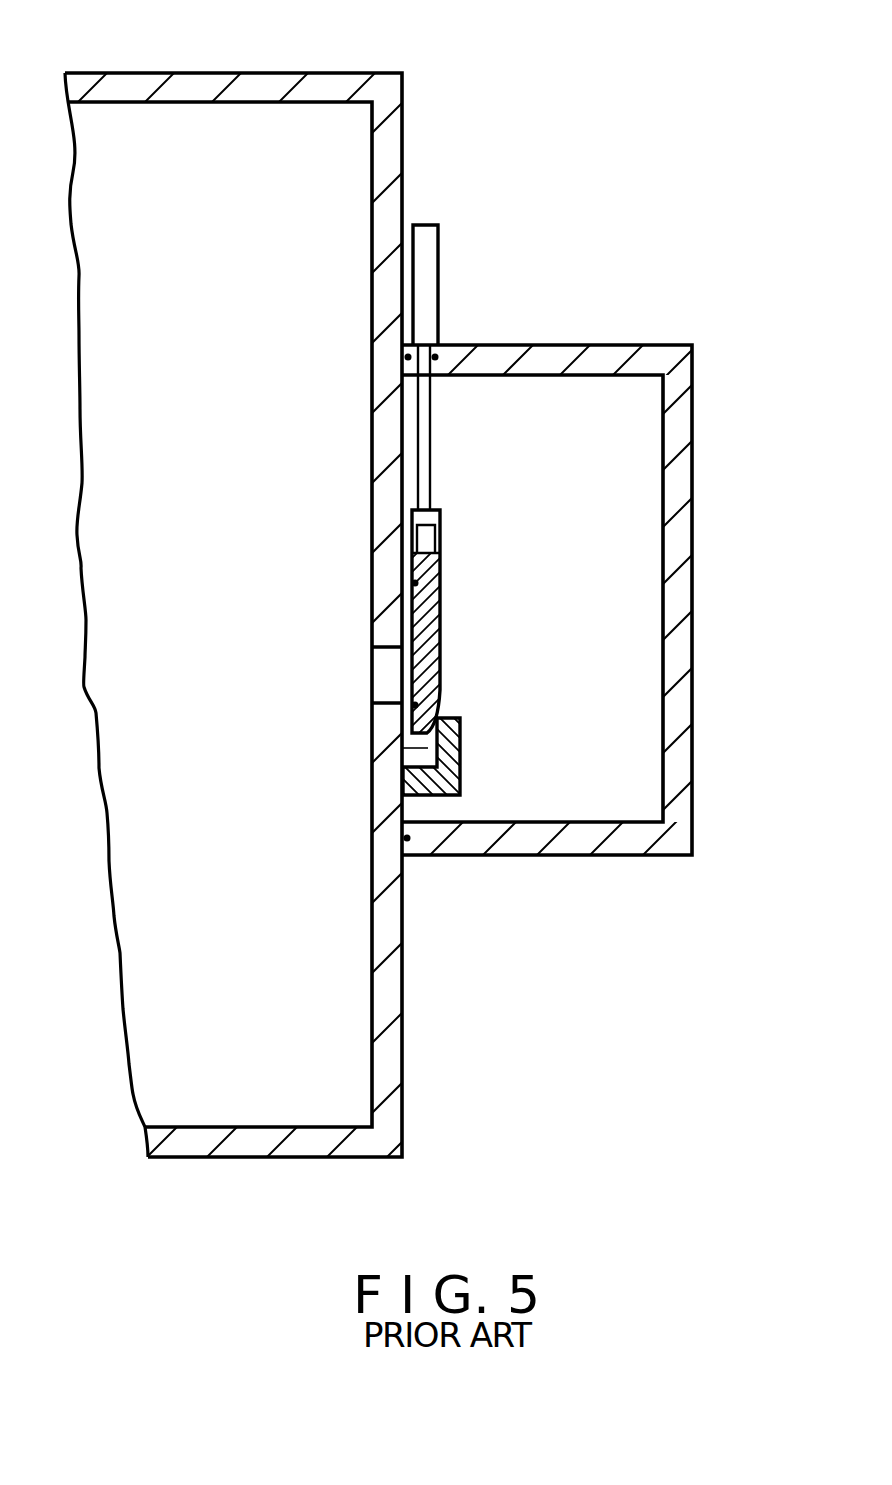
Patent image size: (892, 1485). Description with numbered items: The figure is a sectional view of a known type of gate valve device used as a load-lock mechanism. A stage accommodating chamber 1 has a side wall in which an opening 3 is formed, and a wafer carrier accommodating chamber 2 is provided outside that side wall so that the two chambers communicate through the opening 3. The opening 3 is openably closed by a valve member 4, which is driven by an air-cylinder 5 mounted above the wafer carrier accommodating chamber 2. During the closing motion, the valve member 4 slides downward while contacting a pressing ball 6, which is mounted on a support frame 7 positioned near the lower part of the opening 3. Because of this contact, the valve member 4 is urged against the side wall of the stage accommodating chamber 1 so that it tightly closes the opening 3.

The stage accommodating chamber 1 is at (346, 72).
The wafer carrier accommodating chamber 2 is at (643, 344).
The opening 3 is at (382, 672).
The valve member 4 is at (441, 621).
The air-cylinder 5 is at (428, 273).
The pressing ball 6 is at (425, 748).
The support frame 7 is at (462, 745).